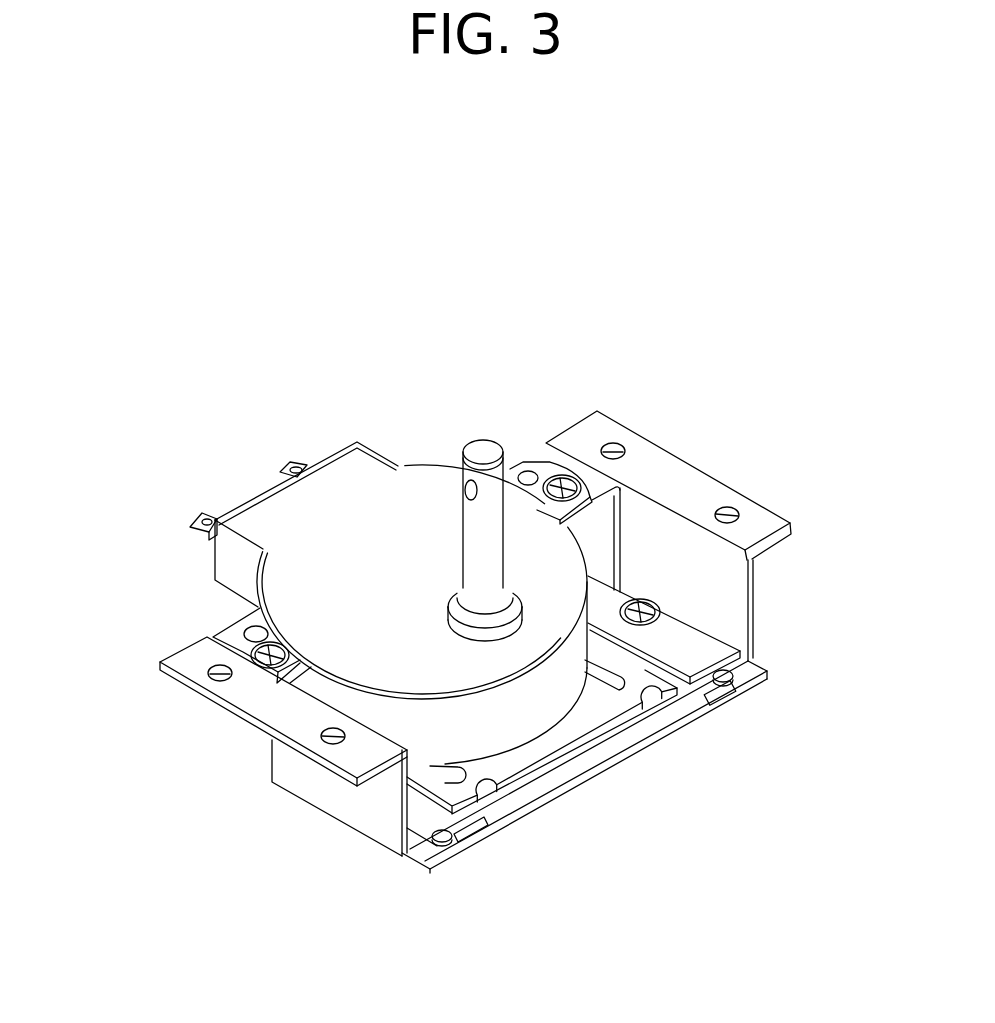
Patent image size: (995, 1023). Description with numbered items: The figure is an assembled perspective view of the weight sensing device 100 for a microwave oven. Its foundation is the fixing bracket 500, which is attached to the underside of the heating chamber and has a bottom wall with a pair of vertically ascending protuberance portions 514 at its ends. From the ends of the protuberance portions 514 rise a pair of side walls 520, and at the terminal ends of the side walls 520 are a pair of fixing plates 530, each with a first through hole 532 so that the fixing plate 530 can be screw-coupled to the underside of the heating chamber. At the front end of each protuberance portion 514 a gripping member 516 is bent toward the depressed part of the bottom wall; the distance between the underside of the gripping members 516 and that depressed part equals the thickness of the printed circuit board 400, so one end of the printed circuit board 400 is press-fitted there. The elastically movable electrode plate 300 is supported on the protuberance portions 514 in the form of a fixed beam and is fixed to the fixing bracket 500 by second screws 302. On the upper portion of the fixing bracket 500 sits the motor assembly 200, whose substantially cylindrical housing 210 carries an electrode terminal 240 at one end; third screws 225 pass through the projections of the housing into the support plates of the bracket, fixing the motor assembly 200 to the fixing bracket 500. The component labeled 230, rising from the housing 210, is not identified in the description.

The weight sensing device 100 is at (503, 263).
The motor assembly 200 is at (185, 563).
The cylindrical housing 210 is at (345, 445).
The third screws 225 is at (543, 462).
The motor shaft 230 is at (456, 518).
The electrode terminal 240 is at (283, 466).
The elastically movable electrode plate 300 is at (543, 747).
The second screws 302 is at (668, 610).
The printed circuit board 400 is at (607, 747).
The fixing bracket 500 is at (283, 812).
The protuberance portions 514 is at (437, 850).
The gripping member 516 is at (473, 823).
The side walls 520 is at (715, 580).
The fixing plates 530 is at (258, 700).
The first through hole 532 is at (313, 722).